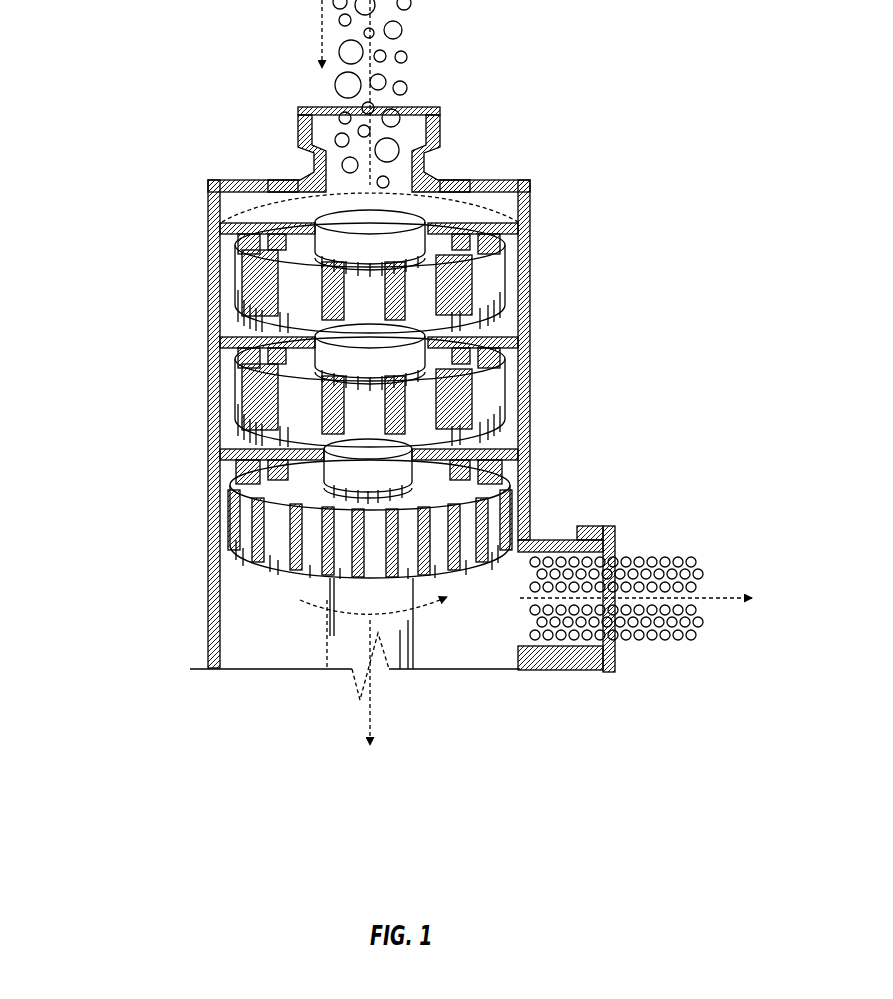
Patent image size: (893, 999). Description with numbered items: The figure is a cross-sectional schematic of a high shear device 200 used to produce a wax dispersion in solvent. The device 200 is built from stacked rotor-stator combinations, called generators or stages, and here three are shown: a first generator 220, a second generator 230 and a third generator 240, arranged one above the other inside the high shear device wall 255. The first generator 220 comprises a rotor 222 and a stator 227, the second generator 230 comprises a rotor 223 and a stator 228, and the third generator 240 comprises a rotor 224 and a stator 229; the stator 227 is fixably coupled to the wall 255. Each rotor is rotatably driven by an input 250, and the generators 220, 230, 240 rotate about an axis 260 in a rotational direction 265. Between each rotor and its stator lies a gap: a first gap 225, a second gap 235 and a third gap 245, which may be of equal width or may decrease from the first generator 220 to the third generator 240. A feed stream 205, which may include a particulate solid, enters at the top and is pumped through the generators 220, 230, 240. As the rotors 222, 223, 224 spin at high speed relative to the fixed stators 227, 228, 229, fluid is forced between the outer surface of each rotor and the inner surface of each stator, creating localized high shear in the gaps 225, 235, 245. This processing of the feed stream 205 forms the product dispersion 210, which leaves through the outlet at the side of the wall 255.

The high shear device 200 is at (155, 70).
The feed stream 205 is at (408, 96).
The product dispersion 210 is at (708, 600).
The first generator 220 is at (205, 228).
The rotor 222 is at (503, 267).
The rotor 223 is at (504, 378).
The rotor 224 is at (517, 494).
The first gap 225 is at (482, 278).
The stator 227 is at (496, 217).
The stator 228 is at (494, 327).
The stator 229 is at (494, 437).
The second generator 230 is at (205, 340).
The second gap 235 is at (486, 386).
The third generator 240 is at (205, 450).
The third gap 245 is at (525, 505).
The input 250 is at (332, 653).
The high shear device wall 255 is at (208, 186).
The axis 260 is at (362, 716).
The rotational direction 265 is at (425, 610).